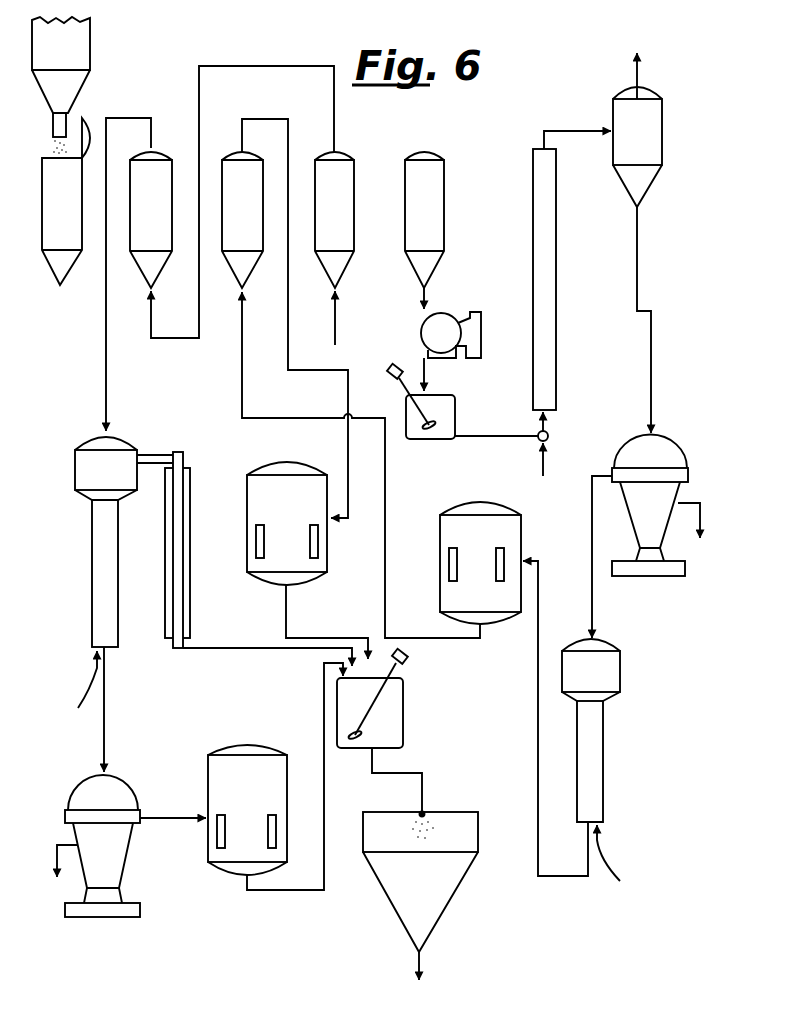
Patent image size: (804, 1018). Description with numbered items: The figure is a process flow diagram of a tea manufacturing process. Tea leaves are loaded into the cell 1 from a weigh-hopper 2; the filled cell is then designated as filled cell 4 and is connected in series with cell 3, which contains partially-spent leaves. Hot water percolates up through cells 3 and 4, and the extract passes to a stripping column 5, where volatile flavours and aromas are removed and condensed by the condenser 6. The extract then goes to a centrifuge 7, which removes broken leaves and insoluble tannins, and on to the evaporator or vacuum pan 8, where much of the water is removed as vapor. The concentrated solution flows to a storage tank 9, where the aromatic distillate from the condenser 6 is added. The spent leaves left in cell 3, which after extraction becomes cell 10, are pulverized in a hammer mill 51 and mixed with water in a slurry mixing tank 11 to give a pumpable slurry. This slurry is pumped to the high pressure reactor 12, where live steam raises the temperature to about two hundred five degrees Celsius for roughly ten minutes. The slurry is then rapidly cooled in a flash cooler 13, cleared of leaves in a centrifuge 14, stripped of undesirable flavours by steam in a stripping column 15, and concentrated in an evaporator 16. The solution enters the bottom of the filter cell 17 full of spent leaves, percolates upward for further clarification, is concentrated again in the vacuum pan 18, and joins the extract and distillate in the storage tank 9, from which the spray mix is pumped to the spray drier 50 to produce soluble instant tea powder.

The cell 1 is at (66, 201).
The weigh-hopper 2 is at (83, 47).
The cell 3 is at (252, 205).
The filled cell 4 is at (139, 274).
The stripping column 5 is at (82, 468).
The condenser 6 is at (178, 540).
The centrifuge 7 is at (120, 857).
The evaporator or vacuum pan 8 is at (213, 772).
The storage tank 9 is at (398, 718).
The cell 10 is at (424, 230).
The slurry mixing tank 11 is at (452, 410).
The high pressure reactor 12 is at (546, 284).
The flash cooler 13 is at (653, 137).
The centrifuge 14 is at (642, 524).
The stripping column 15 is at (616, 673).
The evaporator 16 is at (512, 533).
The filter cell 17 is at (285, 318).
The vacuum pan 18 is at (323, 547).
The spray drier 50 is at (442, 905).
The hammer mill 51 is at (450, 313).